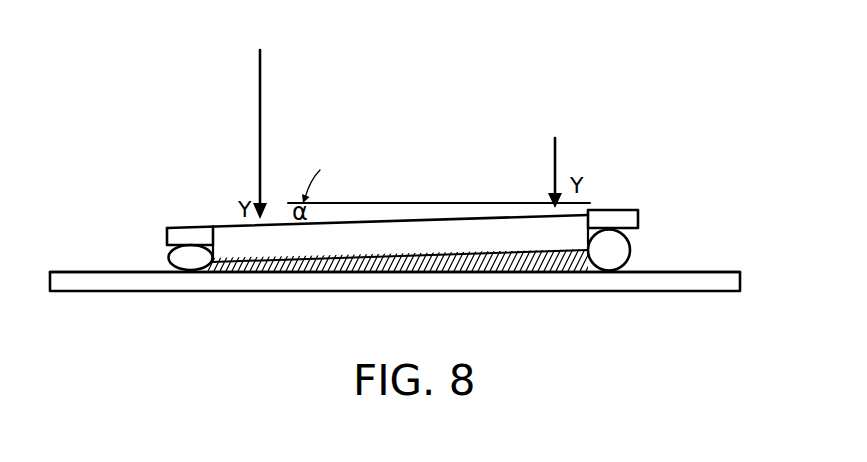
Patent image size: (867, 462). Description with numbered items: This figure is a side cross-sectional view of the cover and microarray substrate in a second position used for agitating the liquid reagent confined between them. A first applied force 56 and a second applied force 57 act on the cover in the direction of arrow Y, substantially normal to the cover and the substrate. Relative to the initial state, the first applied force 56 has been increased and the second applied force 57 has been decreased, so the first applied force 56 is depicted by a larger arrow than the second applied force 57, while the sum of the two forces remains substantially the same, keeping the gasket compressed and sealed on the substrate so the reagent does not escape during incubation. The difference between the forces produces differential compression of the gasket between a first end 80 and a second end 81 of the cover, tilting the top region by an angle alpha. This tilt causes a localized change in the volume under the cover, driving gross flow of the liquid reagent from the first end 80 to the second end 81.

The first applied force F1 56 is at (259, 133).
The second applied force F2 57 is at (553, 148).
The first end 80 is at (104, 247).
The second end 81 is at (685, 236).